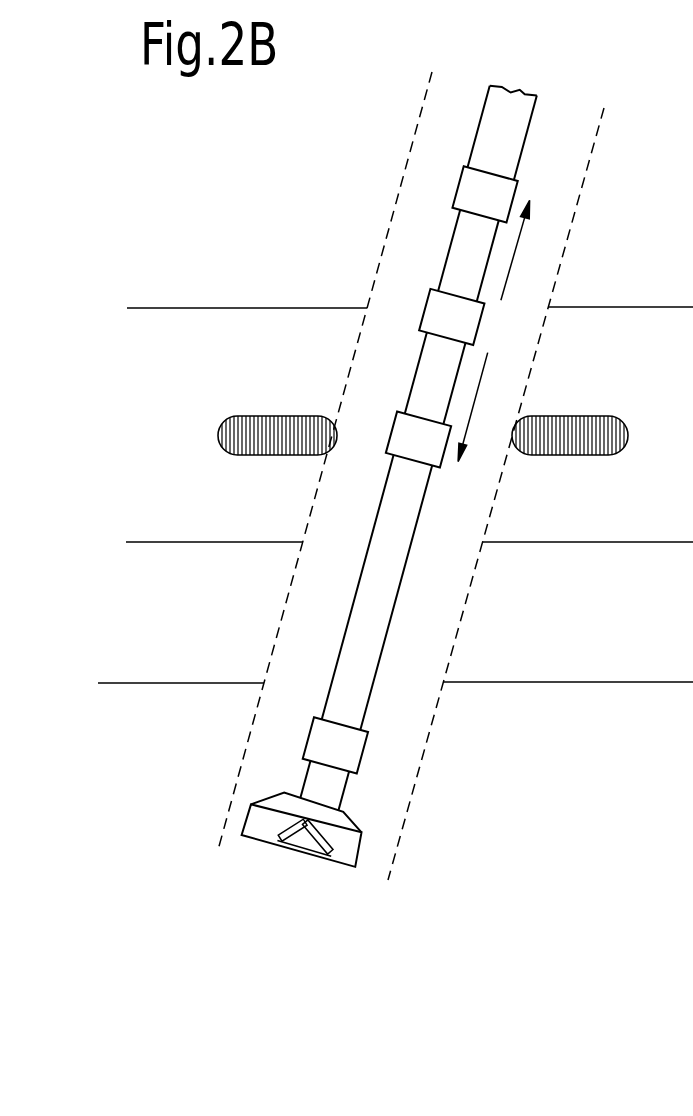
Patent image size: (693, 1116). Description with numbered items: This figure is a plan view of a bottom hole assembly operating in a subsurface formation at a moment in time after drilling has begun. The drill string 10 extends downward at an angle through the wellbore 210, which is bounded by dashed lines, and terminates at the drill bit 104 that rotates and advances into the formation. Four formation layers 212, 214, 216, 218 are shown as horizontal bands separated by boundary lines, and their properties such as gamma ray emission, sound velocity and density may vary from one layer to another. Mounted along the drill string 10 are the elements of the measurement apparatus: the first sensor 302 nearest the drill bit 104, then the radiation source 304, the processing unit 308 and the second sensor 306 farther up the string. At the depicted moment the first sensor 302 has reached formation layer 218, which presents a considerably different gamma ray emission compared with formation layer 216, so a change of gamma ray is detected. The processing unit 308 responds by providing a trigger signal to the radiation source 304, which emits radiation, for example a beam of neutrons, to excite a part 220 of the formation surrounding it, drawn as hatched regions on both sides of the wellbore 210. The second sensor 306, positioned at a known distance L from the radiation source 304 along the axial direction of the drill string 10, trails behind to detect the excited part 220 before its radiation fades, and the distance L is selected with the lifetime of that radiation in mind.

The drill string 10 is at (505, 133).
The drill bit 104 is at (255, 831).
The wellbore 210 is at (436, 120).
The formation layer 212 is at (672, 211).
The formation layer 214 is at (634, 368).
The formation layer 216 is at (560, 622).
The formation layer 218 is at (513, 777).
The excited part of the formation 220 is at (232, 433).
The first sensor 302 is at (310, 738).
The radiation source 304 is at (407, 435).
The second sensor 306 is at (475, 188).
The processing unit 308 is at (450, 328).
The distance L is at (494, 331).